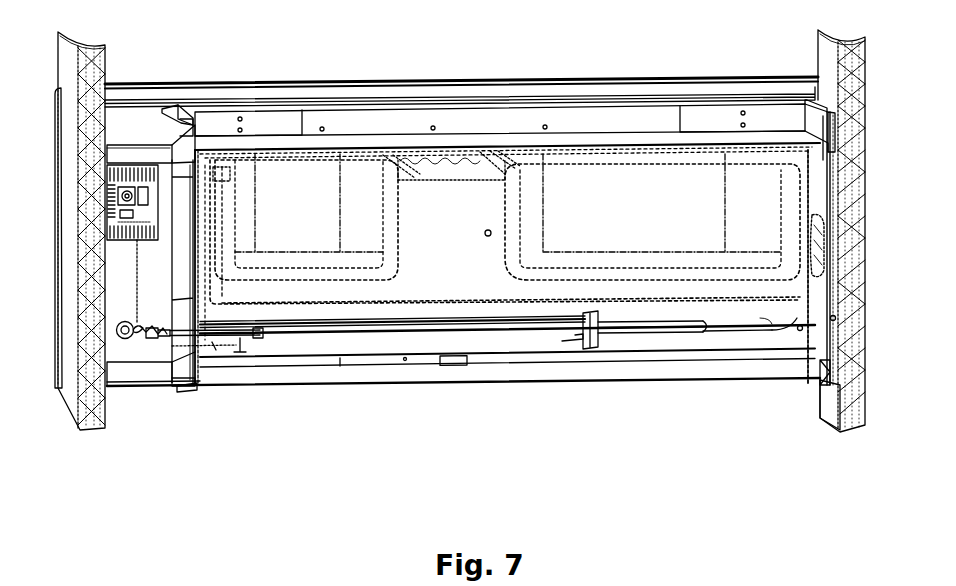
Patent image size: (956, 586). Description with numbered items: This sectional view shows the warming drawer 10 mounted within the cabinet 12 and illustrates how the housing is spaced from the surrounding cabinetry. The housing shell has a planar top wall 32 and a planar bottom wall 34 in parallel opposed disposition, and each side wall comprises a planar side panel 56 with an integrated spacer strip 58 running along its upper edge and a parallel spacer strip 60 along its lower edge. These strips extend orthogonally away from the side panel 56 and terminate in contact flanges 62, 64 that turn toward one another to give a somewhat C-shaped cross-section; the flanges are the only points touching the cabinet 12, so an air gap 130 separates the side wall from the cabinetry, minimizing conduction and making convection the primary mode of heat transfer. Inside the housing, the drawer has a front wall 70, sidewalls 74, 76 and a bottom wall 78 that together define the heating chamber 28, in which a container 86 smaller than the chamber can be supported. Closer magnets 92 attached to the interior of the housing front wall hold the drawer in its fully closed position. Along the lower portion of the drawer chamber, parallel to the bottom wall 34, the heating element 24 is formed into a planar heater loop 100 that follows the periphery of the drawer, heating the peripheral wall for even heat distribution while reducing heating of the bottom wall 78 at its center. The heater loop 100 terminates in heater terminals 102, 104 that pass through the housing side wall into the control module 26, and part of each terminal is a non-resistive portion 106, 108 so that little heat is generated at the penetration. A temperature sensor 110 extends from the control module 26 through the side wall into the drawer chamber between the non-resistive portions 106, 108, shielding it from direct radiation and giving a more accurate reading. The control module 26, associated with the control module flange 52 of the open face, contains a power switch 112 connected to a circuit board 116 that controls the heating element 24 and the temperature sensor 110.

The warming drawer 10 is at (536, 26).
The cabinet 12 is at (65, 407).
The heating element 24 is at (230, 343).
The control module 26 is at (143, 144).
The heating chamber 28 is at (454, 252).
The top wall 32 is at (578, 140).
The bottom wall 34 is at (614, 342).
The control module flange 52 is at (117, 127).
The side panel 56 is at (186, 135).
The spacer strip 58 is at (182, 118).
The spacer strip 60 is at (185, 392).
The contact flange 62 is at (168, 110).
The contact flange 64 is at (175, 385).
The front wall 70 is at (426, 278).
The sidewall 74 is at (214, 346).
The sidewall 76 is at (830, 290).
The bottom wall 78 is at (755, 312).
The container 86 is at (355, 192).
The closer magnets 92 is at (287, 120).
The heater loop 100 is at (525, 325).
The heater terminal 102 is at (140, 340).
The heater terminal 104 is at (163, 342).
The non-resistive portion 106 is at (306, 352).
The non-resistive portion 108 is at (240, 352).
The temperature sensor 110 is at (260, 339).
The power switch 112 is at (116, 329).
The circuit board 116 is at (108, 171).
The air gap 130 is at (836, 318).